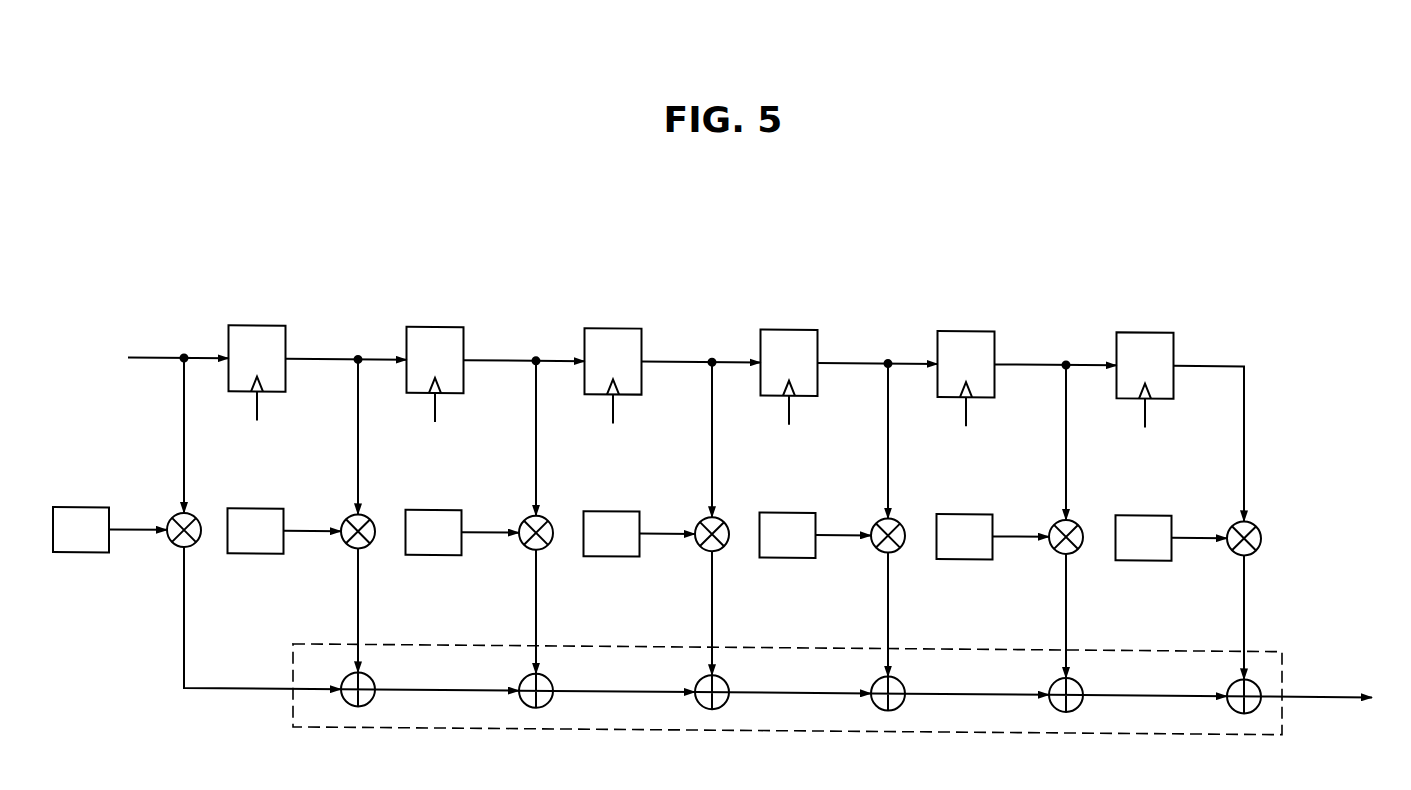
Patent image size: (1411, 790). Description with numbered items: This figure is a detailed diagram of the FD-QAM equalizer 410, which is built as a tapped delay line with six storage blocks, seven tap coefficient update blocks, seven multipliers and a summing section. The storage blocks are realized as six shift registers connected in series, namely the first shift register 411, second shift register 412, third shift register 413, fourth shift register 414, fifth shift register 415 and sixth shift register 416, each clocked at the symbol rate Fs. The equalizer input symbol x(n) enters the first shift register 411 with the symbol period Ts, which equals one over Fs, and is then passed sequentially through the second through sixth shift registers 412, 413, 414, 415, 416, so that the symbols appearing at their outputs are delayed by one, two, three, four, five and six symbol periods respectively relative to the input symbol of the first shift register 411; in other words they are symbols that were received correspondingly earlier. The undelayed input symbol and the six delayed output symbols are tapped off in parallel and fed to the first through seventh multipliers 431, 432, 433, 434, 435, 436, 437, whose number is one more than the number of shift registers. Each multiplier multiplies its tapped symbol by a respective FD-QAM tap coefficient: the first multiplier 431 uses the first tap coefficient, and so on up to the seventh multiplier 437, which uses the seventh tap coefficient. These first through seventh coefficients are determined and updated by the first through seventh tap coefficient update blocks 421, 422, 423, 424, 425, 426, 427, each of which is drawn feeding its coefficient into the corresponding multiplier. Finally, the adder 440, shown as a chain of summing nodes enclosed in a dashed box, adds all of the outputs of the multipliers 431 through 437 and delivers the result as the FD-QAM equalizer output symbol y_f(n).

The FD-QAM equalizer 410 is at (1247, 309).
The first shift register 411 is at (257, 325).
The second shift register 412 is at (435, 325).
The third shift register 413 is at (613, 325).
The fourth shift register 414 is at (789, 325).
The fifth shift register 415 is at (966, 325).
The sixth shift register 416 is at (1145, 325).
The first tap coefficient update block 421 is at (81, 553).
The second tap coefficient update block 422 is at (256, 553).
The third tap coefficient update block 423 is at (434, 553).
The fourth tap coefficient update block 424 is at (612, 553).
The fifth tap coefficient update block 425 is at (788, 553).
The sixth tap coefficient update block 426 is at (964, 553).
The seventh tap coefficient update block 427 is at (1144, 553).
The first multiplier 431 is at (196, 518).
The second multiplier 432 is at (370, 518).
The third multiplier 433 is at (548, 518).
The fourth multiplier 434 is at (724, 518).
The fifth multiplier 435 is at (900, 518).
The sixth multiplier 436 is at (1078, 518).
The seventh multiplier 437 is at (1256, 518).
The adder 440 is at (1283, 650).